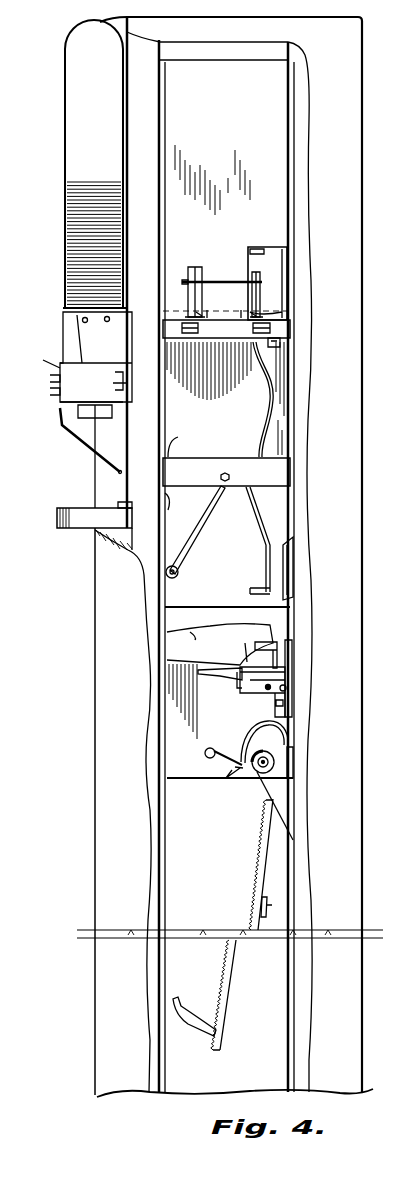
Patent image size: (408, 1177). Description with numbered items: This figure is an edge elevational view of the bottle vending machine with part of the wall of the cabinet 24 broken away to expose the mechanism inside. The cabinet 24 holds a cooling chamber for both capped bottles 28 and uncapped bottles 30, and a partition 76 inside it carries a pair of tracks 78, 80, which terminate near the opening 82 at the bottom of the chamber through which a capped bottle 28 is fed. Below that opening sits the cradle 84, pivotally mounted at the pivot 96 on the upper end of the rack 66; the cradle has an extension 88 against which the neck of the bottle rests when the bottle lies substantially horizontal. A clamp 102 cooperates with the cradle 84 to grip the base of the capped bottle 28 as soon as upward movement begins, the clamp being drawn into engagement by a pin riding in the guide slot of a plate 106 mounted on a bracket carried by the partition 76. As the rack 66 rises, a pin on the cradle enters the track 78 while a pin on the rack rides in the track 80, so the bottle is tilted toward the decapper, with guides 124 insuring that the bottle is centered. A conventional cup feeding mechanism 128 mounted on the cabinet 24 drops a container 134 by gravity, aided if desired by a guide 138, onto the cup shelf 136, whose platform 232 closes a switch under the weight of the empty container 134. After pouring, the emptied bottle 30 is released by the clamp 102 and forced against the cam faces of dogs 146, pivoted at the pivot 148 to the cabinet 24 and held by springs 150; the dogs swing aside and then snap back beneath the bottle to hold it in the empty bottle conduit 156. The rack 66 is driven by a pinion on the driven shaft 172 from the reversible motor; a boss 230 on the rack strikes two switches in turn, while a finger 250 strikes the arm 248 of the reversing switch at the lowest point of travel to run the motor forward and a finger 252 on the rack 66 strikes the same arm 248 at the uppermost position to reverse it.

The cabinet 24 is at (248, 557).
The empty bottle conduit 156 is at (212, 159).
The uncapped bottle 30 is at (274, 269).
The dogs 146 is at (250, 298).
The springs 150 is at (238, 308).
The pivot 148 is at (291, 331).
The cup feeding mechanism 128 is at (62, 349).
The container 134 is at (100, 415).
The guide 138 is at (82, 459).
The platform 232 is at (125, 506).
The cup shelf 136 is at (58, 521).
The track 78 is at (266, 399).
The partition 76 is at (225, 399).
The guides 124 is at (203, 527).
The track 80 is at (296, 554).
The opening 82 is at (208, 606).
The capped bottle 28 is at (194, 639).
The clamp 102 is at (282, 645).
The plate 106 is at (294, 660).
The cradle 84 is at (286, 672).
The pivot 96 is at (289, 689).
The extension 88 is at (228, 681).
The finger 250 is at (252, 742).
The arm 248 is at (233, 779).
The driven shaft 172 is at (272, 795).
The rack 66 is at (258, 856).
The boss 230 is at (266, 906).
The finger 252 is at (192, 1028).